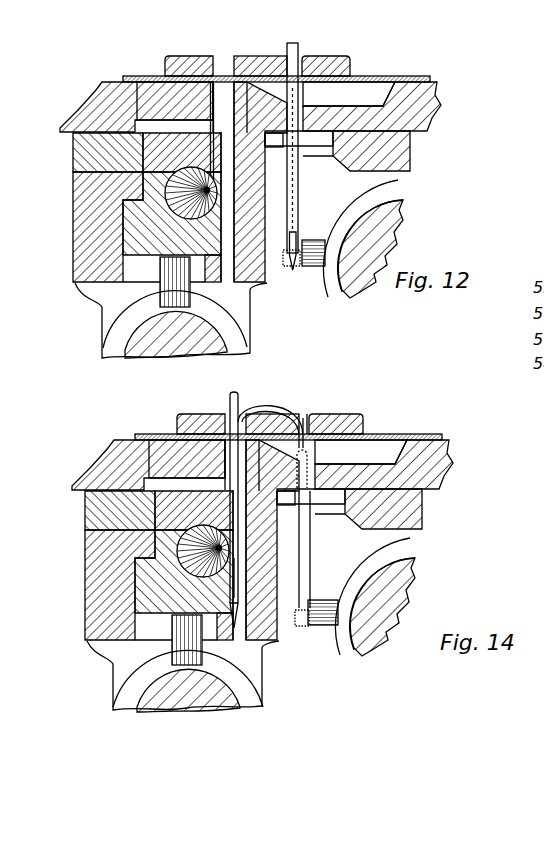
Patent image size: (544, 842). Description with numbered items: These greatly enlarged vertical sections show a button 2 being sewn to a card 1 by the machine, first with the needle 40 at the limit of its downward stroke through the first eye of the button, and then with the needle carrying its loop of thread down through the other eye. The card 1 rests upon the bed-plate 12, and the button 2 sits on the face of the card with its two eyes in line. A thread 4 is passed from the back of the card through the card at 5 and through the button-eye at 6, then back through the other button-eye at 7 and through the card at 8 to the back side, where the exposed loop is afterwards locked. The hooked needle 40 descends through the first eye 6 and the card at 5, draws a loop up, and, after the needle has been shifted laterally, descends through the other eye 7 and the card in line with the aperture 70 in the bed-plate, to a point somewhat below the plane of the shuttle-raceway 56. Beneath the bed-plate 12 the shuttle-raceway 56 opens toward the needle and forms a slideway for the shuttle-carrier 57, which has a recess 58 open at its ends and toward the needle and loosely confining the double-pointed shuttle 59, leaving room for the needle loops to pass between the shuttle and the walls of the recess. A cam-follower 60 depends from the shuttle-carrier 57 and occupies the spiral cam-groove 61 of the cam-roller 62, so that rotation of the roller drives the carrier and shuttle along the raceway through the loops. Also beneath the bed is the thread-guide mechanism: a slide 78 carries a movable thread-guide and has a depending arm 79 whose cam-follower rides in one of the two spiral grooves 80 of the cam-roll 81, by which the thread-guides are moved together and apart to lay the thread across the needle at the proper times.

In FIG. 12, the card 1 is at (373, 82).
In FIG. 14, the card 1 is at (297, 417).
In FIG. 12, the buttons 2 is at (322, 56).
In FIG. 14, the buttons 2 is at (353, 406).
In FIG. 12, the thread 4 is at (268, 78).
In FIG. 14, the thread 4 is at (326, 540).
In FIG. 12, the card passage point 5 is at (290, 100).
In FIG. 14, the card passage point 5 is at (306, 538).
In FIG. 12, the button-eye 6 is at (299, 58).
In FIG. 14, the button-eye 6 is at (321, 406).
In FIG. 12, the other button-eye 7 is at (220, 58).
In FIG. 14, the other button-eye 7 is at (207, 491).
In FIG. 14, the card passage point 8 is at (203, 502).
In FIG. 12, the bed-plate 12 is at (88, 102).
In FIG. 14, the bed-plate 12 is at (137, 465).
In FIG. 12, the needle 40 is at (300, 150).
In FIG. 14, the needle 40 is at (270, 413).
In FIG. 12, the shuttle-raceway 56 is at (120, 208).
In FIG. 14, the shuttle-raceway 56 is at (136, 565).
In FIG. 12, the shuttle-carrier 57 is at (127, 243).
In FIG. 14, the shuttle-carrier 57 is at (136, 553).
In FIG. 12, the recess 58 is at (90, 283).
In FIG. 12, the double-pointed shuttle 59 is at (205, 190).
In FIG. 14, the double-pointed shuttle 59 is at (136, 585).
In FIG. 12, the cam-follower 60 is at (180, 295).
In FIG. 14, the cam-follower 60 is at (215, 642).
In FIG. 12, the spiral cam-groove 61 is at (233, 343).
In FIG. 14, the spiral cam-groove 61 is at (179, 675).
In FIG. 12, the cam-roller 62 is at (155, 352).
In FIG. 14, the cam-roller 62 is at (188, 704).
In FIG. 12, the aperture 70 is at (274, 141).
In FIG. 14, the aperture 70 is at (302, 499).
In FIG. 12, the slide 78 is at (320, 139).
In FIG. 14, the slide 78 is at (370, 502).
In FIG. 12, the depending arm 79 is at (283, 197).
In FIG. 14, the depending arm 79 is at (314, 624).
In FIG. 12, the spiral grooves 80 is at (372, 192).
In FIG. 14, the spiral grooves 80 is at (395, 596).
In FIG. 12, the cam-roll 81 is at (378, 223).
In FIG. 14, the cam-roll 81 is at (386, 607).